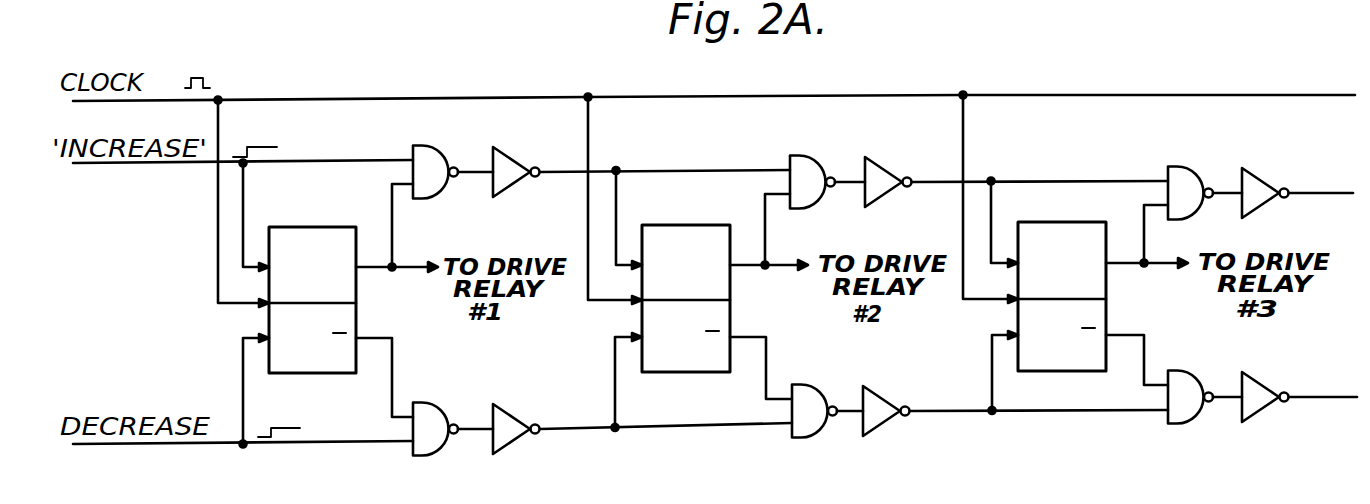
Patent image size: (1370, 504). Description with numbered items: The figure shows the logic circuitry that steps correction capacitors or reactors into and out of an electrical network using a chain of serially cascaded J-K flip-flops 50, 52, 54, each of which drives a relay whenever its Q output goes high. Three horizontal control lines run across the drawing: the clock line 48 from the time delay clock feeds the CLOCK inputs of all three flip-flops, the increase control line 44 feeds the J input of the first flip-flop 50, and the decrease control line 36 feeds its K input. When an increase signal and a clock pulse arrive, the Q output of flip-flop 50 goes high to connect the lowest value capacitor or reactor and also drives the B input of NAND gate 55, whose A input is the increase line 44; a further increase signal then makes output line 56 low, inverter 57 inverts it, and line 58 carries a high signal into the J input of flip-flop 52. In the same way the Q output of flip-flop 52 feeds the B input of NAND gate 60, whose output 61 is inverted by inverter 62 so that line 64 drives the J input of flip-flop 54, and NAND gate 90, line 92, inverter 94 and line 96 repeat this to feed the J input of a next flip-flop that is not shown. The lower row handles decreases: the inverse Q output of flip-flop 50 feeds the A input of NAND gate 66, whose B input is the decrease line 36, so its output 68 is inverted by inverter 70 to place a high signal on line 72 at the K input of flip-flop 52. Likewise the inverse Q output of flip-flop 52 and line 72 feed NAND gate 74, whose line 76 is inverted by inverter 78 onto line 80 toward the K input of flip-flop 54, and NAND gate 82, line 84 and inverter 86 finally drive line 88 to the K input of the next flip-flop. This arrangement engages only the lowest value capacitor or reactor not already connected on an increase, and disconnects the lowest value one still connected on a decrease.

The decrease control line 36 is at (210, 448).
The increase control line 44 is at (190, 168).
The clock line 48 is at (180, 104).
The first J-K flip-flop 50 is at (318, 262).
The second J-K flip-flop 52 is at (688, 259).
The third J-K flip-flop 54 is at (1068, 259).
The NAND gate 55 is at (437, 147).
The NAND gate output line 56 is at (468, 162).
The inverter 57 is at (508, 168).
The inverter output line 58 is at (613, 168).
The NAND gate 60 is at (798, 157).
The NAND gate output 61 is at (843, 178).
The inverter 62 is at (880, 178).
The inverter output line 64 is at (975, 180).
The NAND gate 66 is at (417, 456).
The NAND gate output 68 is at (462, 433).
The inverter 70 is at (504, 440).
The inverter output line 72 is at (583, 431).
The NAND gate 74 is at (801, 437).
The NAND gate output line 76 is at (845, 414).
The inverter 78 is at (878, 421).
The inverter output line 80 is at (965, 414).
The NAND gate 82 is at (1172, 424).
The NAND gate output line 84 is at (1216, 400).
The inverter 86 is at (1250, 418).
The inverter output line 88 is at (1310, 400).
The NAND gate 90 is at (1188, 167).
The NAND gate output line 92 is at (1218, 190).
The inverter 94 is at (1256, 182).
The inverter output line 96 is at (1312, 191).